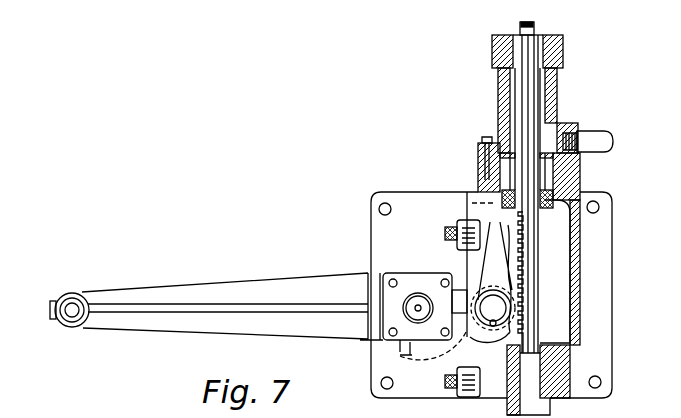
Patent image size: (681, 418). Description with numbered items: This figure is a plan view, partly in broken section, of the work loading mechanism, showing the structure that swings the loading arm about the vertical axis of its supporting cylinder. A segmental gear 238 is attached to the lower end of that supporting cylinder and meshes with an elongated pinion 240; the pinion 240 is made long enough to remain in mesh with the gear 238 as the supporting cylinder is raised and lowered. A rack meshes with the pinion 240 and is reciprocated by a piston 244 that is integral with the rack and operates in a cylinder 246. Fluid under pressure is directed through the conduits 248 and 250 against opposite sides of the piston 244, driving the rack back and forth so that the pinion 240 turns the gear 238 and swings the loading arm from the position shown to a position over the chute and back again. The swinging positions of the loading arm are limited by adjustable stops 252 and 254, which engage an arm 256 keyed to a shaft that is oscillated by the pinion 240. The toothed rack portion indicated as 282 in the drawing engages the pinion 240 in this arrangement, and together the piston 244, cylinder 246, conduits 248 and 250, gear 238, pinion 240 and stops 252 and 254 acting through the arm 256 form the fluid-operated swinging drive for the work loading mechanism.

The segmental gear 238 is at (410, 350).
The elongated pinion 240 is at (216, 306).
The piston 244 is at (540, 60).
The cylinder 246 is at (552, 95).
The conduit 248 is at (610, 140).
The conduit 250 is at (520, 27).
The adjustable stop 252 is at (468, 220).
The adjustable stop 254 is at (457, 374).
The arm 256 is at (495, 257).
The rack 282 is at (533, 312).